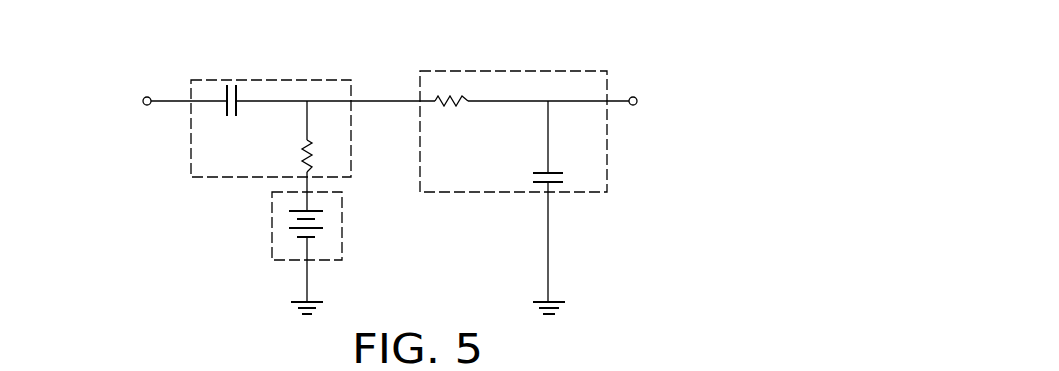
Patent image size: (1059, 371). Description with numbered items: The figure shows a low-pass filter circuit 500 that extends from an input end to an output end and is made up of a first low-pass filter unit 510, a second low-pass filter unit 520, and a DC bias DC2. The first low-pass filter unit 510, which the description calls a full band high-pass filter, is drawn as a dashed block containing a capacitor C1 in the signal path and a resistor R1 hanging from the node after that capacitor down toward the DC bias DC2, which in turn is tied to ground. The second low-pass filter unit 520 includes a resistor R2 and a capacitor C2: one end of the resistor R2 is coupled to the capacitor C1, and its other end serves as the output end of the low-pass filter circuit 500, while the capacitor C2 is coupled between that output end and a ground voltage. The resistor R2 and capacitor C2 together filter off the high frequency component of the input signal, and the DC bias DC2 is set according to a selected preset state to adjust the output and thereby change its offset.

The low-pass filter circuit 500 is at (718, 315).
The first low-pass filter unit 510 is at (270, 79).
The second low-pass filter unit 520 is at (522, 70).
The capacitor C1 is at (231, 118).
The first resistor R1 is at (323, 156).
The DC bias DC2 is at (354, 253).
The resistor R2 is at (451, 120).
The capacitor C2 is at (565, 207).